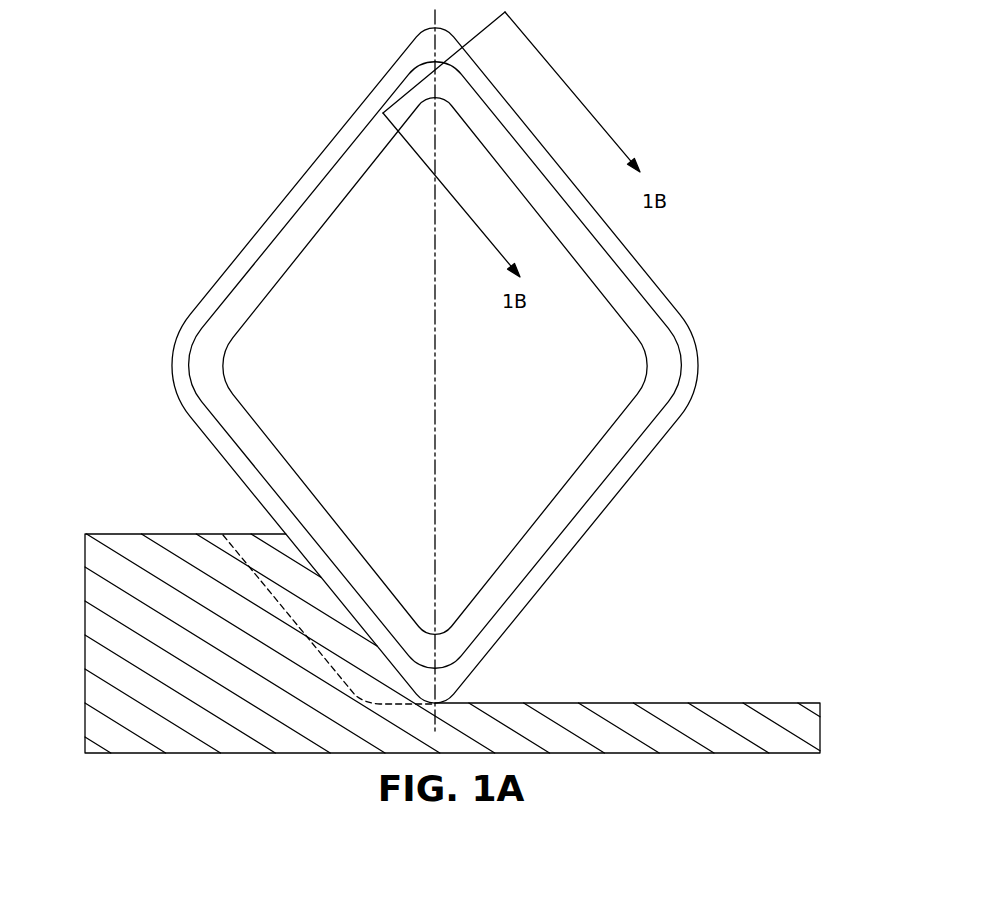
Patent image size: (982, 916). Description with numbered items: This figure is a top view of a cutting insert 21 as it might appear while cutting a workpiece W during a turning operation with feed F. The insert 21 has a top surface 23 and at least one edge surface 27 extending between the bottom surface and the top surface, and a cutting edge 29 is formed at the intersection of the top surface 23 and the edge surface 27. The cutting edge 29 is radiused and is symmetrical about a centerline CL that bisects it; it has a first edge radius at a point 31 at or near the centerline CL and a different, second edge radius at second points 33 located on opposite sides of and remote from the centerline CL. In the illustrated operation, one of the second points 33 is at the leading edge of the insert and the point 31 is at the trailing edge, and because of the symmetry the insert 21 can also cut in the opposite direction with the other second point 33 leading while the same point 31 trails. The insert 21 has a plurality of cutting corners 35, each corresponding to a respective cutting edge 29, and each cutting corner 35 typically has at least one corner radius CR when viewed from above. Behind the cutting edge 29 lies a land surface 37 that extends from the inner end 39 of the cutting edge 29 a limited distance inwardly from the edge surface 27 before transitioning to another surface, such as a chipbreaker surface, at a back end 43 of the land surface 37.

The cutting insert 21 is at (423, 372).
The top surface 23 is at (593, 405).
The edge surface 27 is at (246, 483).
The cutting edge 29 is at (488, 81).
The point 31 is at (428, 30).
The second points 33 is at (296, 198).
The cutting corners 35 is at (388, 31).
The land surface 37 is at (365, 163).
The inner end 39 is at (310, 200).
The back end 43 is at (347, 195).
The workpiece W is at (96, 523).
The feed F is at (303, 653).
The centerline CL is at (440, 445).
The corner radius CR is at (459, 694).